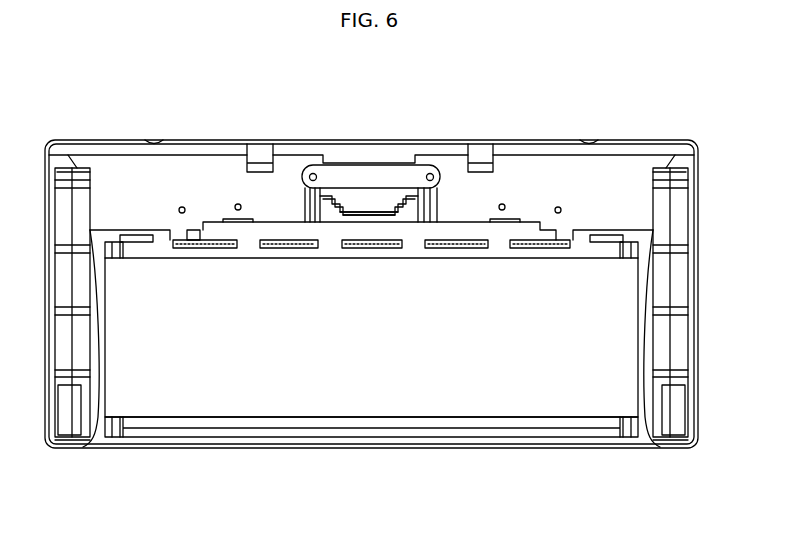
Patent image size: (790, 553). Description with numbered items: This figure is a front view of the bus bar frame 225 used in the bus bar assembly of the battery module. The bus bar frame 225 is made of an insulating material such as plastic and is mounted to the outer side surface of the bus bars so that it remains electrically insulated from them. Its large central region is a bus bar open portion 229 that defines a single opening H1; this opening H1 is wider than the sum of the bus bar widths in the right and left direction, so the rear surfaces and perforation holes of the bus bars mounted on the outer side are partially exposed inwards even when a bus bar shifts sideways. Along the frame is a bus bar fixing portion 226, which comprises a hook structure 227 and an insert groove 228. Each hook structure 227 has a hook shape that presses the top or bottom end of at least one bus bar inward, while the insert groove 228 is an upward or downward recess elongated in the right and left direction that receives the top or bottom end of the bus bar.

The bus bar frame 225 is at (80, 118).
The bus bar fixing portion 226 is at (606, 66).
The hook structure 227 is at (527, 240).
The insert groove 228 is at (430, 428).
The bus bar open portion 229 is at (93, 440).
The opening H1 is at (355, 331).